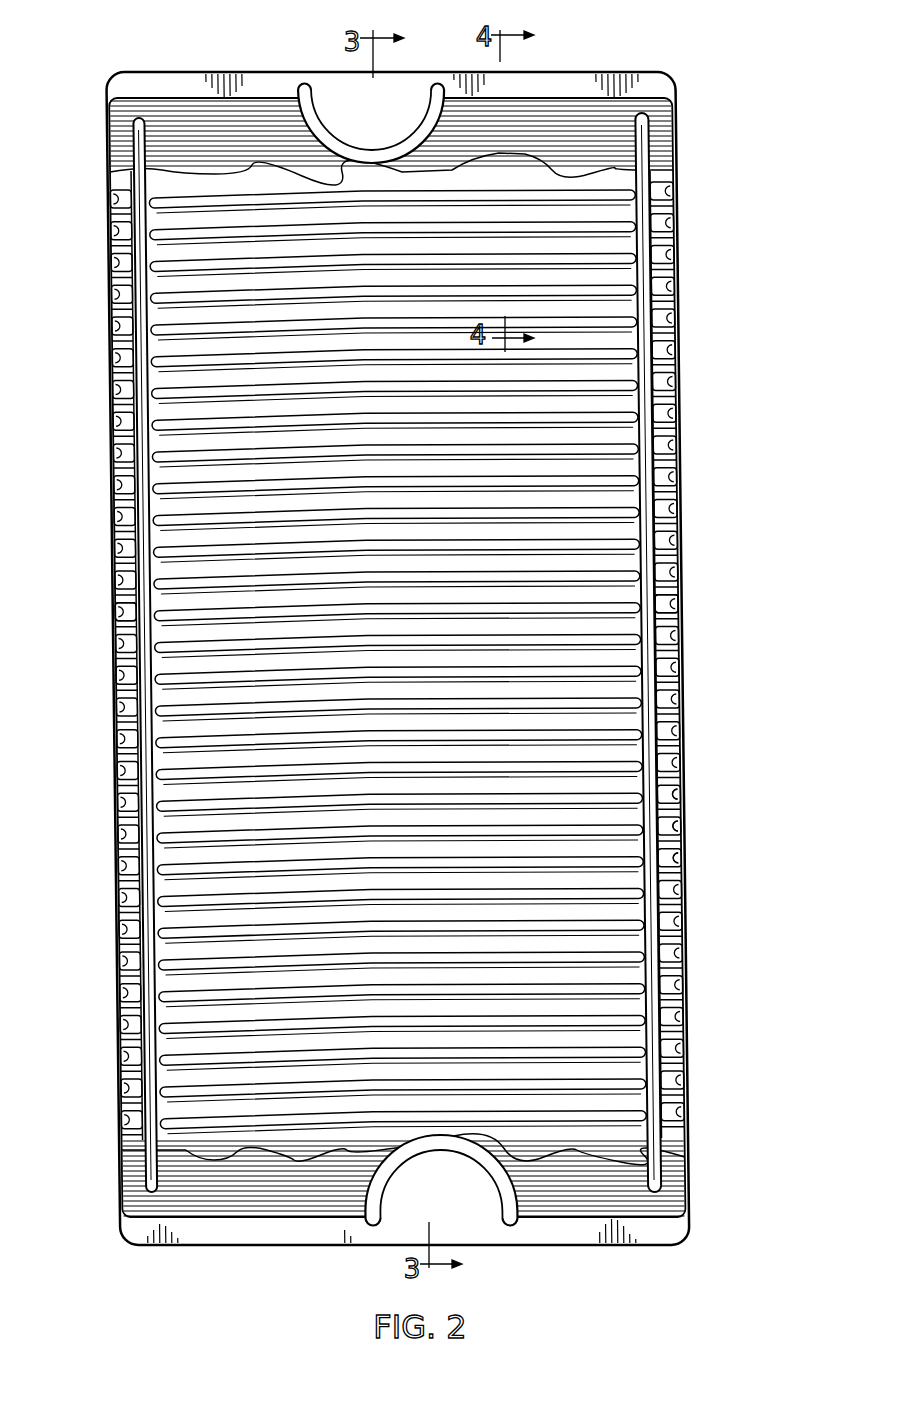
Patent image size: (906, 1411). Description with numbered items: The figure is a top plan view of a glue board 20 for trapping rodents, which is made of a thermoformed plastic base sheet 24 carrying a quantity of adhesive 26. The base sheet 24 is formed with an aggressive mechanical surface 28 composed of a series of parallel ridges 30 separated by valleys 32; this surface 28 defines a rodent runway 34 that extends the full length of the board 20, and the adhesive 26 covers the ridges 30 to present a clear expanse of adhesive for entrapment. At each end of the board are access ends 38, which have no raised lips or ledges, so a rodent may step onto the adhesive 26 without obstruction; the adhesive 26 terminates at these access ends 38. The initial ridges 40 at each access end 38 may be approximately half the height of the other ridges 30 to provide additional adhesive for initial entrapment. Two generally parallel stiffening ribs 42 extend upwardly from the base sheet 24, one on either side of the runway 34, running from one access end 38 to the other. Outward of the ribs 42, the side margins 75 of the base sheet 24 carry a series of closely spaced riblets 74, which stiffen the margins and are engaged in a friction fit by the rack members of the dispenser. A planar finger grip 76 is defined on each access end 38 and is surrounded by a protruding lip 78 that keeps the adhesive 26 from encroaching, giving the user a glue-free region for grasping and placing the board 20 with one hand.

The glue board 20 is at (420, 656).
The base sheet 24 is at (611, 72).
The adhesive 26 is at (678, 172).
The aggressive mechanical surface 28 is at (617, 368).
The ridges 30 is at (627, 447).
The valleys 32 is at (623, 465).
The rodent runway 34 is at (246, 182).
The access ends 38 is at (551, 72).
The initial ridges 40 is at (603, 187).
The ribs 42 is at (672, 625).
The riblets 74 is at (675, 857).
The side margins 75 is at (125, 498).
The finger grip 76 is at (407, 100).
The lip 78 is at (320, 108).